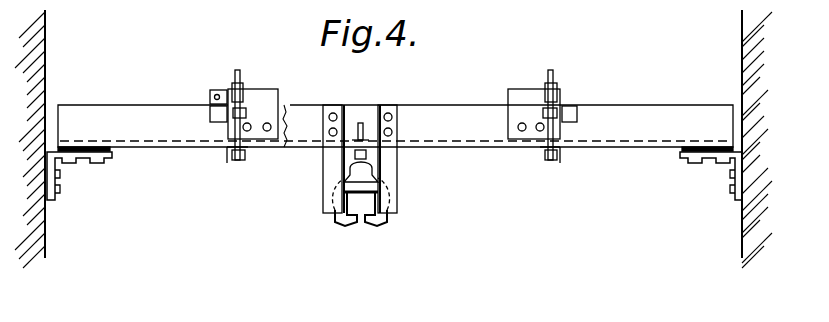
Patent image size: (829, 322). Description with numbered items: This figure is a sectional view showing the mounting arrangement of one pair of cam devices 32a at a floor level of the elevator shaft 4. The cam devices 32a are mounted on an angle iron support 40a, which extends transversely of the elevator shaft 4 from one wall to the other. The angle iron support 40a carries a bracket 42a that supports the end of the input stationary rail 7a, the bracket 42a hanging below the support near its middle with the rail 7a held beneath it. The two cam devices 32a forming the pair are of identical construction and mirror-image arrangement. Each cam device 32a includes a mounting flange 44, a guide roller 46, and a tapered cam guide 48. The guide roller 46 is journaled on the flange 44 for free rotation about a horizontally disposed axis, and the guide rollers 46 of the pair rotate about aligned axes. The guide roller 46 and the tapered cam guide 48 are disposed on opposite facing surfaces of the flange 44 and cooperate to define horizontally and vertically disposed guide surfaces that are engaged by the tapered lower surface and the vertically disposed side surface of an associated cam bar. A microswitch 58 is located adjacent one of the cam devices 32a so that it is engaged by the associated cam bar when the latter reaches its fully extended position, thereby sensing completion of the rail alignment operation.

The elevator shaft 4 is at (742, 52).
The angle iron support 40a is at (126, 105).
The mounting flange 44 is at (283, 94).
The tapered cam guide 48 is at (236, 90).
The microswitch 58 is at (210, 94).
The guide roller 46 is at (210, 115).
The cam device 32a is at (294, 57).
The bracket 42a is at (397, 160).
The input stationary rail 7a is at (378, 207).